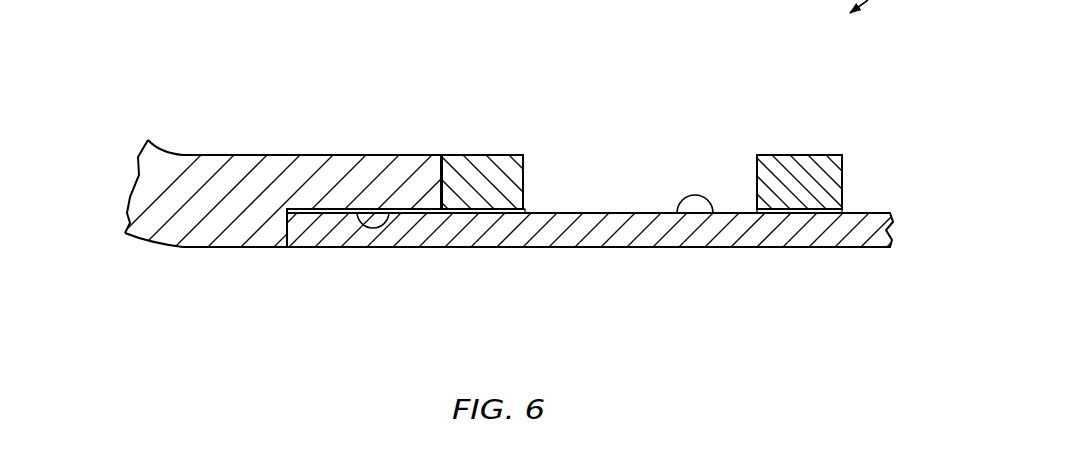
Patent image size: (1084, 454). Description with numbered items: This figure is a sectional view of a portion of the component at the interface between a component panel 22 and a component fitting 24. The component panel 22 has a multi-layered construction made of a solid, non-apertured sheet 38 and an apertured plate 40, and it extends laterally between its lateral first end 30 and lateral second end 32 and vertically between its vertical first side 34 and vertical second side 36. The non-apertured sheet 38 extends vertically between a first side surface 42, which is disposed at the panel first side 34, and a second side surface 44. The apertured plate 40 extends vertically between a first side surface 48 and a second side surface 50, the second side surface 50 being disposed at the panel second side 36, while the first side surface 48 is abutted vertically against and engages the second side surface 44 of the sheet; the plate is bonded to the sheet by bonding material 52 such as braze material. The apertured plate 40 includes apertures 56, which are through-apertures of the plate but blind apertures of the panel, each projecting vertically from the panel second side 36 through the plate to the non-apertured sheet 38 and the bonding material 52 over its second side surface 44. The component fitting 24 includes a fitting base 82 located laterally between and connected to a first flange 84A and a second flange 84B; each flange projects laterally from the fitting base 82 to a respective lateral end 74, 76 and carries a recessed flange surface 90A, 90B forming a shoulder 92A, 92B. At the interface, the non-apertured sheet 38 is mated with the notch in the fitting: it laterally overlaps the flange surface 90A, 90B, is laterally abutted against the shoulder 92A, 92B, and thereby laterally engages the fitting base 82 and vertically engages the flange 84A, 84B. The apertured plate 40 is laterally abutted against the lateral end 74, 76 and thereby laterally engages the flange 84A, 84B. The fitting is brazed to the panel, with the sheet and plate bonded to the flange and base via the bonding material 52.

The component panel 22 is at (870, 132).
The component fitting 24 is at (287, 159).
The lateral first end 30 is at (227, 261).
The lateral second end 32 is at (287, 232).
The vertical first side 34 is at (544, 273).
The vertical second side 36 is at (830, 136).
The non-apertured sheet 38 is at (564, 264).
The apertured plate 40 is at (830, 136).
The first side surface 42 is at (544, 273).
The second side surface 44 is at (678, 213).
The first side surface 48 is at (810, 213).
The second side surface 50 is at (792, 155).
The bonding material 52 is at (557, 206).
The aperture 56 is at (657, 165).
The lateral first end 74 is at (478, 143).
The lateral second end 76 is at (443, 172).
The fitting base 82 is at (125, 218).
The first flange 84A is at (294, 97).
The second flange 84B is at (322, 153).
The first flange surface 90A is at (381, 159).
The second flange surface 90B is at (393, 210).
The first shoulder 92A is at (349, 268).
The second shoulder 92B is at (290, 225).